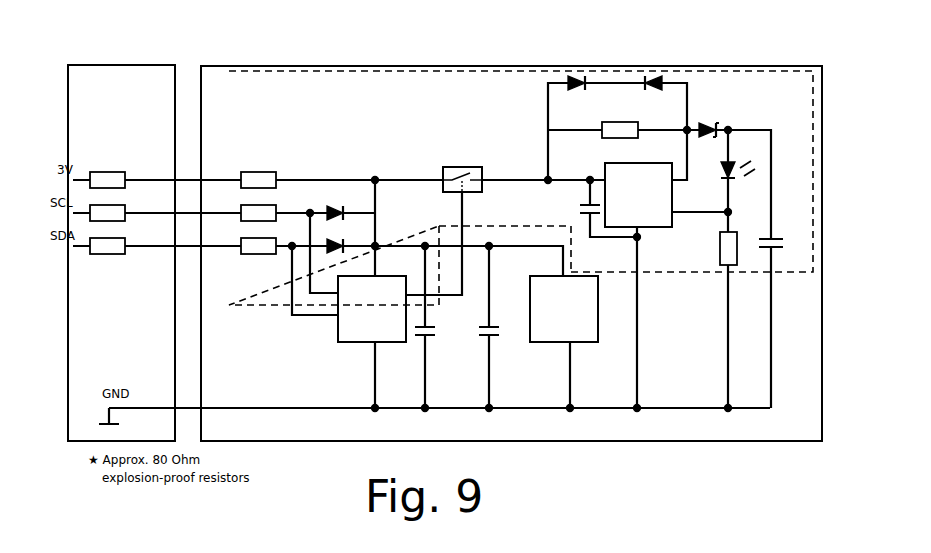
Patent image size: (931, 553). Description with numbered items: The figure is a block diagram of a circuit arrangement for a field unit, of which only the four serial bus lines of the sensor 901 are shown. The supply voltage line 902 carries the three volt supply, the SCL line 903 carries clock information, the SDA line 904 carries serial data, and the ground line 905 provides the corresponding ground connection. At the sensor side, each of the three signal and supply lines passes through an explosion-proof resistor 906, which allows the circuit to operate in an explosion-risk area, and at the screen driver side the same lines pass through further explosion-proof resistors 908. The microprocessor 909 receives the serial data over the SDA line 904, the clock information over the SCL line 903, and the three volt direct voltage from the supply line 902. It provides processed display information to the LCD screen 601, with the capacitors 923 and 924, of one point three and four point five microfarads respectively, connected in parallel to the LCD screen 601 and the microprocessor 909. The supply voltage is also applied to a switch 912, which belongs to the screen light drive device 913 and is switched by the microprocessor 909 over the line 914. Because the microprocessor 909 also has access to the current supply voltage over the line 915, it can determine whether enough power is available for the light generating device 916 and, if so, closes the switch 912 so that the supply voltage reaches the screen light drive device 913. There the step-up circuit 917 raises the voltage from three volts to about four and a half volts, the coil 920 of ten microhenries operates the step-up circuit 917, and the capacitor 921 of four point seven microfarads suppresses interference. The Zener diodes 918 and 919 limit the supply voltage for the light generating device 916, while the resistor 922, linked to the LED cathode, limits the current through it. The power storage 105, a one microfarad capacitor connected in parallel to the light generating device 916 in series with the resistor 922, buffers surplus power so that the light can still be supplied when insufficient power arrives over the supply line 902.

The sensor / field unit 901 is at (125, 88).
The supply voltage line 902 is at (142, 211).
The SCL line 903 is at (150, 178).
The SDA line 904 is at (150, 248).
The ground line 905 is at (160, 405).
The explosion-proof resistor 906 is at (100, 256).
The explosion-proof resistors 908 is at (258, 171).
The microprocessor 909 is at (338, 334).
The switch 912 is at (460, 168).
The screen light drive device 913 is at (775, 68).
The line 914 is at (445, 235).
The line 915 is at (378, 205).
The light generating device 916 is at (733, 160).
The step-up circuit 917 is at (648, 220).
The Zener diodes 918 is at (577, 80).
The Zener diode 919 is at (707, 124).
The coil 920 is at (600, 122).
The capacitor 921 is at (575, 210).
The resistor 922 is at (723, 266).
The capacitor 923 is at (418, 340).
The capacitor 924 is at (482, 340).
The LCD screen module 601 is at (555, 345).
The power storage 105 is at (785, 245).